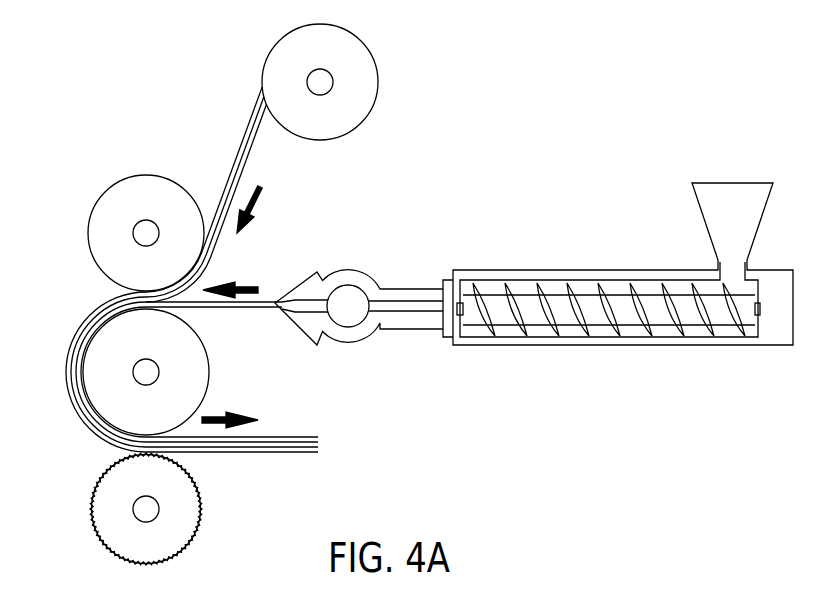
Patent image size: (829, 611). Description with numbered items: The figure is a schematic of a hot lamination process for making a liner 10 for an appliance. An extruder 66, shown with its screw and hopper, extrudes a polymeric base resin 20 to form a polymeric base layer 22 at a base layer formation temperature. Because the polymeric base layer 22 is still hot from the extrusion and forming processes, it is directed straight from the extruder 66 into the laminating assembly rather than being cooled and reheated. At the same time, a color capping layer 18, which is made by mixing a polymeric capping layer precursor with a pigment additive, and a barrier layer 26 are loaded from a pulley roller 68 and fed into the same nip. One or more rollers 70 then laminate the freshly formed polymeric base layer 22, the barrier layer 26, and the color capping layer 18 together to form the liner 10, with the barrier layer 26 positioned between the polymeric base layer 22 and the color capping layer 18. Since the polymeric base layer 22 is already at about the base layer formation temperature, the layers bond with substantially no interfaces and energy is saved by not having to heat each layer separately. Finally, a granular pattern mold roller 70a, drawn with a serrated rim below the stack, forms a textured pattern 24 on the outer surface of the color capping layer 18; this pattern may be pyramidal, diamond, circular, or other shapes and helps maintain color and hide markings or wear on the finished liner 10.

The liner 10 is at (278, 430).
The color capping layer 18 is at (248, 127).
The polymeric base resin 20 is at (351, 295).
The polymeric base layer 22 is at (223, 312).
The textured pattern 24 is at (244, 453).
The barrier layer 26 is at (252, 145).
The extruder 66 is at (595, 346).
The pulley roller 68 is at (360, 70).
The rollers 70 is at (46, 140).
The granular pattern mold roller 70a is at (98, 521).